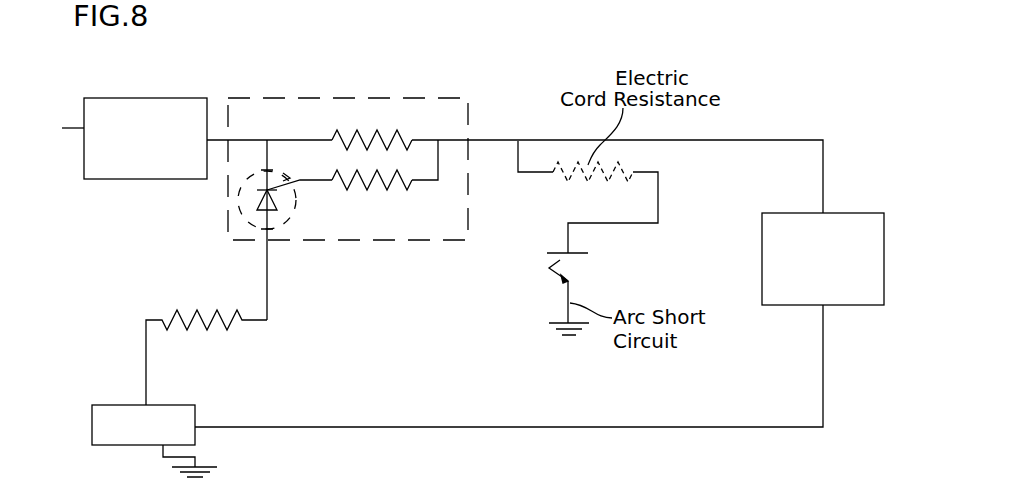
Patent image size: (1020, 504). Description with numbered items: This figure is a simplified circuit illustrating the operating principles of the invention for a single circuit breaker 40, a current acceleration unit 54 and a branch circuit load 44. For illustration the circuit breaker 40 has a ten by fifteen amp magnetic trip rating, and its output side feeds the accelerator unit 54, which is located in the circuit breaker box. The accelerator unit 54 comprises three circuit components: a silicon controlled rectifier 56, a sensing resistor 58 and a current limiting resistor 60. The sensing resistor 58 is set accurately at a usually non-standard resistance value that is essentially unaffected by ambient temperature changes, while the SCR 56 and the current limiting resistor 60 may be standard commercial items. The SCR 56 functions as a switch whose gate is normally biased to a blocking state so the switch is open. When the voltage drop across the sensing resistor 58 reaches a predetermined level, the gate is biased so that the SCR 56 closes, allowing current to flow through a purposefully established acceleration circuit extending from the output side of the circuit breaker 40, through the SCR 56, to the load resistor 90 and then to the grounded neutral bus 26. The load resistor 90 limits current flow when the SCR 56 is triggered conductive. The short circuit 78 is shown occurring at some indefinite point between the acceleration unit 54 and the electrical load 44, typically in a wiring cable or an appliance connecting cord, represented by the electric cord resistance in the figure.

The circuit breaker 40 is at (132, 98).
The accelerator unit 54 is at (307, 98).
The silicon controlled rectifier (SCR) 56 is at (297, 200).
The sensing resistor 58 is at (390, 135).
The current limiting resistor 60 is at (375, 185).
The load resistor 90 is at (166, 315).
The neutral bus 26 is at (118, 405).
The branch circuit load 44 is at (858, 213).
The short circuit 78 is at (538, 264).